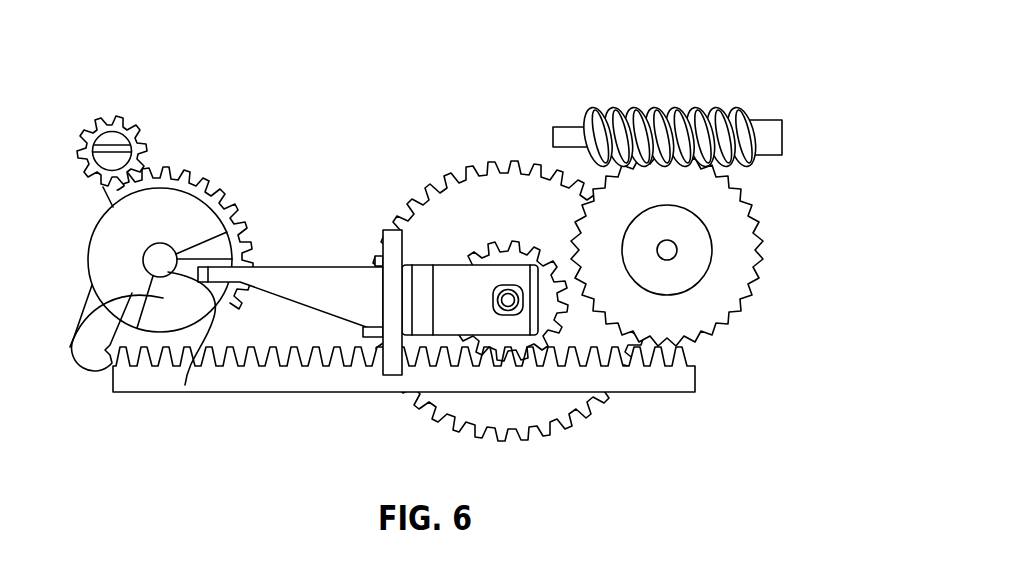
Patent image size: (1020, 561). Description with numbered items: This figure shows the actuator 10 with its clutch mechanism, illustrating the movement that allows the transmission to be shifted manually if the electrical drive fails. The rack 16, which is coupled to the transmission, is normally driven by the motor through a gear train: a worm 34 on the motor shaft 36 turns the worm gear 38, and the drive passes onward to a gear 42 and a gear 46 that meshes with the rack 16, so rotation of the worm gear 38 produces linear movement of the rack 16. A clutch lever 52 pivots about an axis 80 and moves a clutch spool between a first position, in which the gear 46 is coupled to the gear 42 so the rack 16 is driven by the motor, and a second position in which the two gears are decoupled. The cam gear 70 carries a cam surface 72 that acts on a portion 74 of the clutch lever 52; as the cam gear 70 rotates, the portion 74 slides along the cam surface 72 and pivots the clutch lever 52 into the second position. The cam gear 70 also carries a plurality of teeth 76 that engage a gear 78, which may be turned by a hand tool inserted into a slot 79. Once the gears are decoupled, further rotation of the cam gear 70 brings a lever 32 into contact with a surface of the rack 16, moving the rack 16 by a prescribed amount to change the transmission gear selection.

The actuator 10 is at (409, 253).
The rack 16 is at (237, 378).
The lever 32 is at (85, 303).
The worm 34 is at (665, 106).
The shaft 36 is at (572, 120).
The worm gear 38 is at (747, 293).
The gear 42 is at (583, 410).
The gear 46 is at (540, 338).
The clutch lever 52 is at (330, 293).
The cam gear 70 is at (87, 239).
The cam surface 72 is at (77, 349).
The portion or end of clutch lever 74 is at (185, 385).
The teeth 76 is at (240, 193).
The gear 78 is at (127, 122).
The slot 79 is at (88, 143).
The axis 80 is at (389, 376).